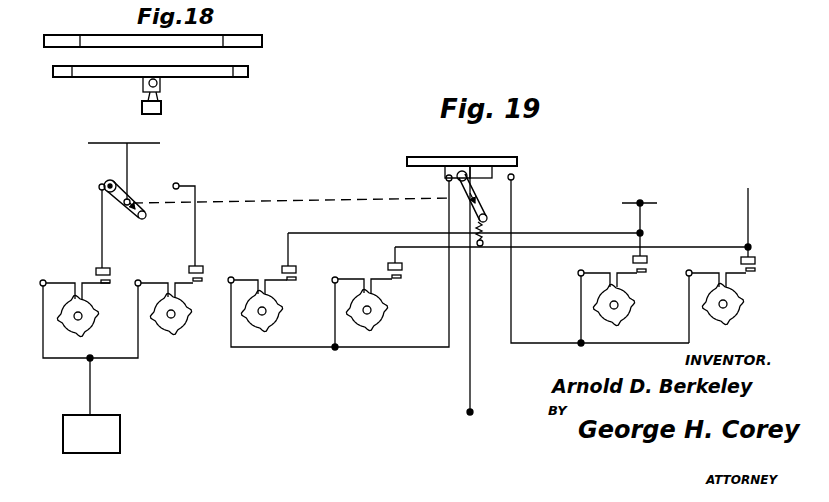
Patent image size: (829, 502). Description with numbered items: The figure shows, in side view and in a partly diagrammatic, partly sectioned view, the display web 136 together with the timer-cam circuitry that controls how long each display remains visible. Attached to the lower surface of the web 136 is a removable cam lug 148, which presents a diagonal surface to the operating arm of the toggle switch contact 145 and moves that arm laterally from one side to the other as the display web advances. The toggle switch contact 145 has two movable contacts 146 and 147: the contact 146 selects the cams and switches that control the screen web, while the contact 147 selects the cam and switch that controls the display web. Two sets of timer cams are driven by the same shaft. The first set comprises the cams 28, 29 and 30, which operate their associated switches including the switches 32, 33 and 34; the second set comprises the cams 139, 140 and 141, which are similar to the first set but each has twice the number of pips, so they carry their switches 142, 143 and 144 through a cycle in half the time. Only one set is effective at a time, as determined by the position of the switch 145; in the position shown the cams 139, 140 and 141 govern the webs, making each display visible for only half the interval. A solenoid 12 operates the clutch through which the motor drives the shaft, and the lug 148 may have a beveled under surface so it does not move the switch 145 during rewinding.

In FIG. 18, the web 136 is at (221, 78).
In FIG. 18, the removable cam lug 148 is at (143, 85).
In FIG. 18, the toggle switch contact 146 is at (160, 88).
In FIG. 19, the toggle switch contact 146 is at (456, 184).
In FIG. 19, the toggle switch contact 147 is at (118, 196).
In FIG. 19, the switch 144 is at (85, 266).
In FIG. 19, the switch 34 is at (172, 271).
In FIG. 19, the timer cam 141 is at (88, 326).
In FIG. 19, the solenoid 12 is at (91, 404).
In FIG. 19, the timer cam 30 is at (181, 322).
In FIG. 19, the switch 142 is at (274, 263).
In FIG. 19, the timer cam 139 is at (278, 311).
In FIG. 19, the switch 32 is at (368, 273).
In FIG. 19, the timer cam 28 is at (385, 318).
In FIG. 19, the toggle switch contact 145 is at (519, 193).
In FIG. 19, the switch 143 is at (607, 267).
In FIG. 19, the timer cam 140 is at (628, 318).
In FIG. 19, the switch 33 is at (719, 270).
In FIG. 19, the timer cam 29 is at (737, 318).